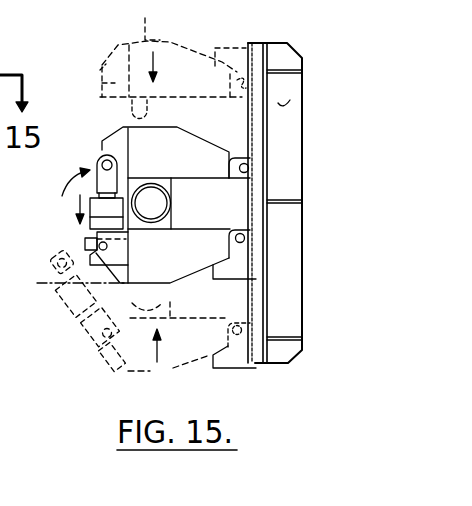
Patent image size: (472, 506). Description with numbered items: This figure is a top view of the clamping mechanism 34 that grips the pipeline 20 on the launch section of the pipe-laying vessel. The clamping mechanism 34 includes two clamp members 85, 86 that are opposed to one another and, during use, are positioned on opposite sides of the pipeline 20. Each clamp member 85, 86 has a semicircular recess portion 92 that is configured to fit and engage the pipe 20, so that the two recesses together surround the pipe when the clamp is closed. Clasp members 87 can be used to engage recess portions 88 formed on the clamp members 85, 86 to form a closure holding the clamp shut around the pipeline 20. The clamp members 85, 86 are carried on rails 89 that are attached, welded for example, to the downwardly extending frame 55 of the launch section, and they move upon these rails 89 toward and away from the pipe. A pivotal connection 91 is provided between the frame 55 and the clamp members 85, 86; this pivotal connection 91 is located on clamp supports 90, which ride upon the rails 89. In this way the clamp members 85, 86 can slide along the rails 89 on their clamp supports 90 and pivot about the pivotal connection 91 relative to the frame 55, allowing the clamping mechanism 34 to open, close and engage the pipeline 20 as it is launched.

The pipeline 20 is at (154, 200).
The clamping mechanism 34 is at (347, 147).
The frame 55 is at (293, 272).
The clamp member 85 is at (142, 15).
The clamp member 86 is at (128, 397).
The clasp member 87 is at (62, 364).
The recess portion 88 is at (102, 72).
The rail 89 is at (258, 112).
The clamp support 90 is at (240, 131).
The pivotal connection 91 is at (248, 166).
The semicircular recess portion 92 is at (124, 122).